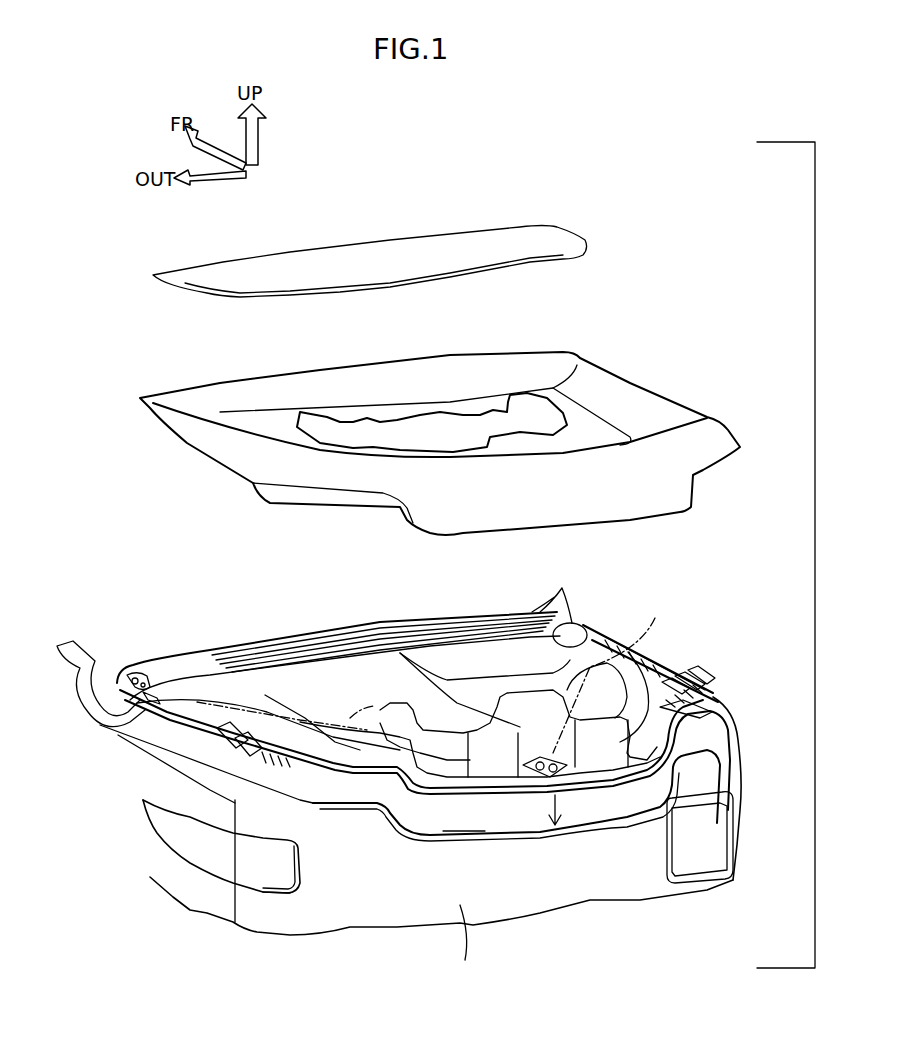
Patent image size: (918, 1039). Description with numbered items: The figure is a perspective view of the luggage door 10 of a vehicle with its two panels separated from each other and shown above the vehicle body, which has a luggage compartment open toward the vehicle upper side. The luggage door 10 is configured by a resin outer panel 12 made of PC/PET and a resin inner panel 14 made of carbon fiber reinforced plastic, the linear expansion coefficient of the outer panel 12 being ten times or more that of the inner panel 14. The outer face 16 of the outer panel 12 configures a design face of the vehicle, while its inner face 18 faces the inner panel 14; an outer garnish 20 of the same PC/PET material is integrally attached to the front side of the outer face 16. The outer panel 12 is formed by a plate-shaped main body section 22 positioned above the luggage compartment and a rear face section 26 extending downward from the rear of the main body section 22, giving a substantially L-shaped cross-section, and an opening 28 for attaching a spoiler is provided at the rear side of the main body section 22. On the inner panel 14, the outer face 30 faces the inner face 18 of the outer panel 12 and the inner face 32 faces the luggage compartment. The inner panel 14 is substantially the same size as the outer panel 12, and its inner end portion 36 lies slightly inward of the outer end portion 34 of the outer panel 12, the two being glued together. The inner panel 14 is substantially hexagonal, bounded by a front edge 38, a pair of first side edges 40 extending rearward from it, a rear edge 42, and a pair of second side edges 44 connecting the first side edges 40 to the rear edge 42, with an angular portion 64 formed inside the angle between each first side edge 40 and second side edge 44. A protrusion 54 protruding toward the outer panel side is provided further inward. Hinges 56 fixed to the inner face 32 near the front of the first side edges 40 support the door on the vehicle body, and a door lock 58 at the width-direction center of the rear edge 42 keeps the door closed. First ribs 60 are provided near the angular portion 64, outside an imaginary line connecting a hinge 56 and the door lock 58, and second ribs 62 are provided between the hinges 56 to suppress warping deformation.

The luggage door 10 is at (664, 258).
The outer panel 12 is at (431, 451).
The inner panel 14 is at (455, 626).
The outer face 16 is at (618, 400).
The inner face 18 is at (703, 470).
The outer garnish 20 is at (540, 238).
The main body section 22 is at (405, 385).
The rear face section 26 is at (500, 530).
The opening 28 is at (478, 428).
The outer face 30 is at (428, 774).
The inner face 32 is at (660, 806).
The outer end portion 34 is at (180, 441).
The inner end portion 36 is at (232, 742).
The front edge 38 is at (196, 670).
The first side edge 40 is at (192, 716).
The rear edge 42 is at (562, 800).
The second side edge 44 is at (335, 760).
The protrusion 54 is at (572, 660).
The hinge 56 is at (133, 674).
The door lock 58 is at (540, 772).
The first rib 60 is at (700, 692).
The second rib 62 is at (561, 600).
The angular portion 64 is at (725, 701).